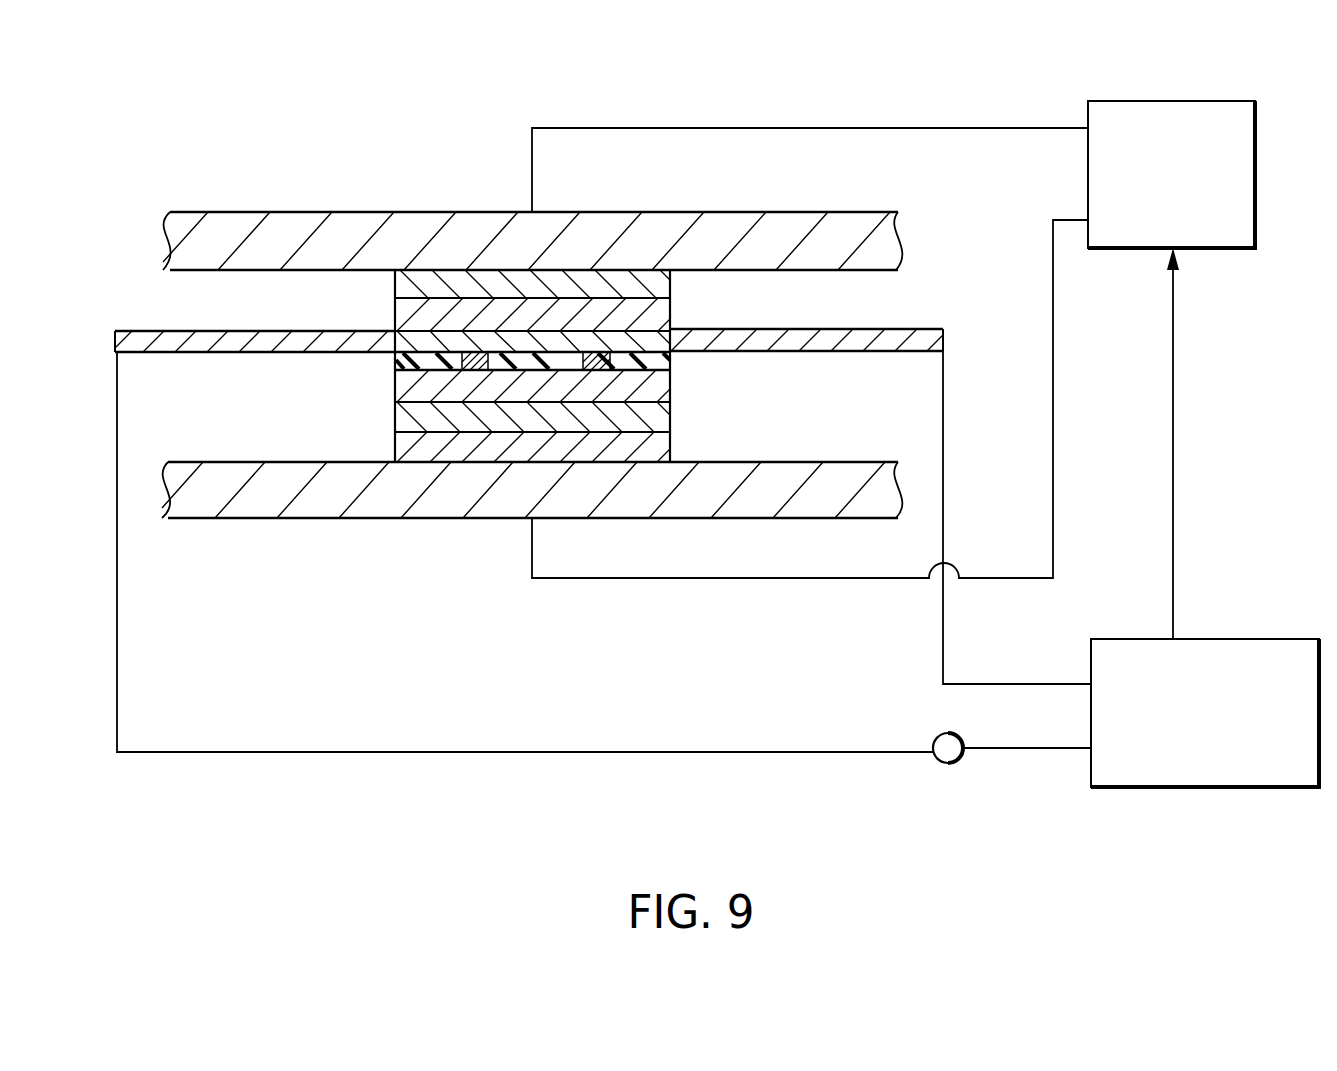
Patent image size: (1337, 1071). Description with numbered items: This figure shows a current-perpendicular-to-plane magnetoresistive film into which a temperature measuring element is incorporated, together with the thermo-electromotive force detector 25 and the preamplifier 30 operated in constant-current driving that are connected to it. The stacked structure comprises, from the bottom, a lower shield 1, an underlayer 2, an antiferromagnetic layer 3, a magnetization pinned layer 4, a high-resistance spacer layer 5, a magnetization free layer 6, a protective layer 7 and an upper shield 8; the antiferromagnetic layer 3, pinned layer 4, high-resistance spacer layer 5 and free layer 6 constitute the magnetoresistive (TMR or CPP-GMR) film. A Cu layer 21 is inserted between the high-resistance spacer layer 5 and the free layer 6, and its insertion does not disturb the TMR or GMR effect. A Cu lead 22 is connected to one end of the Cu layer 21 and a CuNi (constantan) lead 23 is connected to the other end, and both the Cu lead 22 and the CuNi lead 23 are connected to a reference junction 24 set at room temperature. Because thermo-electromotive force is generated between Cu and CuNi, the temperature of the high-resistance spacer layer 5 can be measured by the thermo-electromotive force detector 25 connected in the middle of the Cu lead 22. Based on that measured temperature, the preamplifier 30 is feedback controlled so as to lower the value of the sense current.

The lower shield 1 is at (238, 508).
The underlayer 2 is at (610, 447).
The antiferromagnetic layer 3 is at (455, 422).
The magnetization pinned layer 4 is at (413, 392).
The high-resistance spacer layer 5 is at (662, 360).
The magnetization free layer 6 is at (495, 312).
The protective layer 7 is at (428, 282).
The upper shield 8 is at (257, 226).
The Cu layer 21 is at (580, 338).
The Cu lead 22 is at (946, 336).
The CuNi (constantan) lead 23 is at (140, 346).
The reference junction 24 is at (947, 765).
The thermo-electromotive force detector 25 is at (1170, 790).
The preamplifier 30 is at (1172, 100).